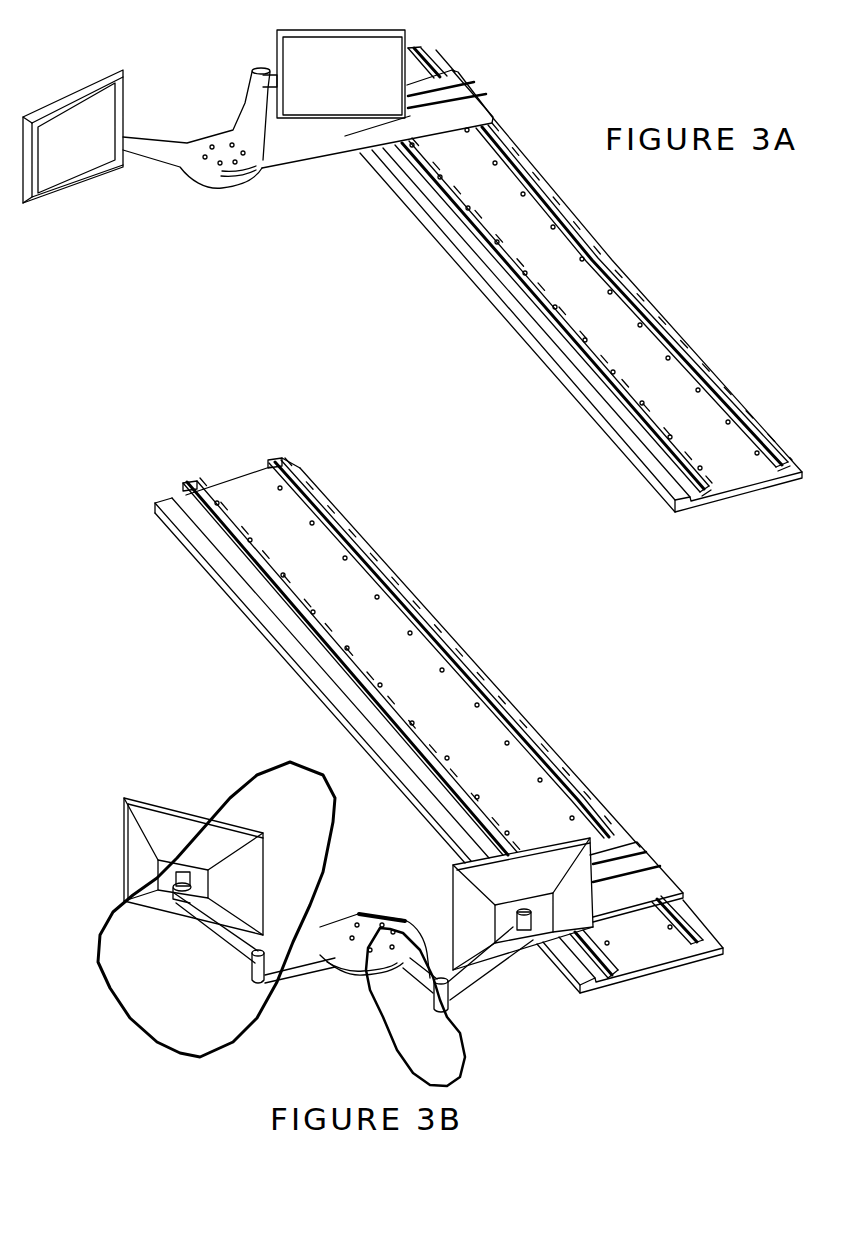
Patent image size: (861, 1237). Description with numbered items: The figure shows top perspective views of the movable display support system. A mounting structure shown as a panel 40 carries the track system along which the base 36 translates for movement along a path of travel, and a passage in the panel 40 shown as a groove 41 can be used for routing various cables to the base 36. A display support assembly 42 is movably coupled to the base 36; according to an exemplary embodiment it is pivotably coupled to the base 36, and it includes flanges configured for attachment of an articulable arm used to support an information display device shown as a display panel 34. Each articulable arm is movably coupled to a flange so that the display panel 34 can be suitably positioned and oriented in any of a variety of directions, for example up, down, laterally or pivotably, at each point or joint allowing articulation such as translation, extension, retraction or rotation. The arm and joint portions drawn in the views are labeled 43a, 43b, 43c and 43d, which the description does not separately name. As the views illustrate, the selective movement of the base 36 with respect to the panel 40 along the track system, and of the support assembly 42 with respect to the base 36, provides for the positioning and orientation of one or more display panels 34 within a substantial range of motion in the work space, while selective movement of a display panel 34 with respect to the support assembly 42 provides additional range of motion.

In FIG. 3A, the display panel 34 is at (75, 160).
In FIG. 3B, the display panel 34 is at (135, 878).
In FIG. 3A, the base 36 is at (465, 98).
In FIG. 3B, the base 36 is at (652, 868).
In FIG. 3A, the panel 40 is at (768, 423).
In FIG. 3B, the panel 40 is at (203, 551).
In FIG. 3A, the groove 41 is at (678, 475).
In FIG. 3A, the display support assembly 42 is at (223, 148).
In FIG. 3B, the display support assembly 42 is at (367, 937).
In FIG. 3B, the arm segment 43a is at (392, 940).
In FIG. 3B, the arm joint column 43b is at (250, 980).
In FIG. 3B, the monitor pivot 43c is at (180, 892).
In FIG. 3B, the articulating arm 43d is at (217, 868).